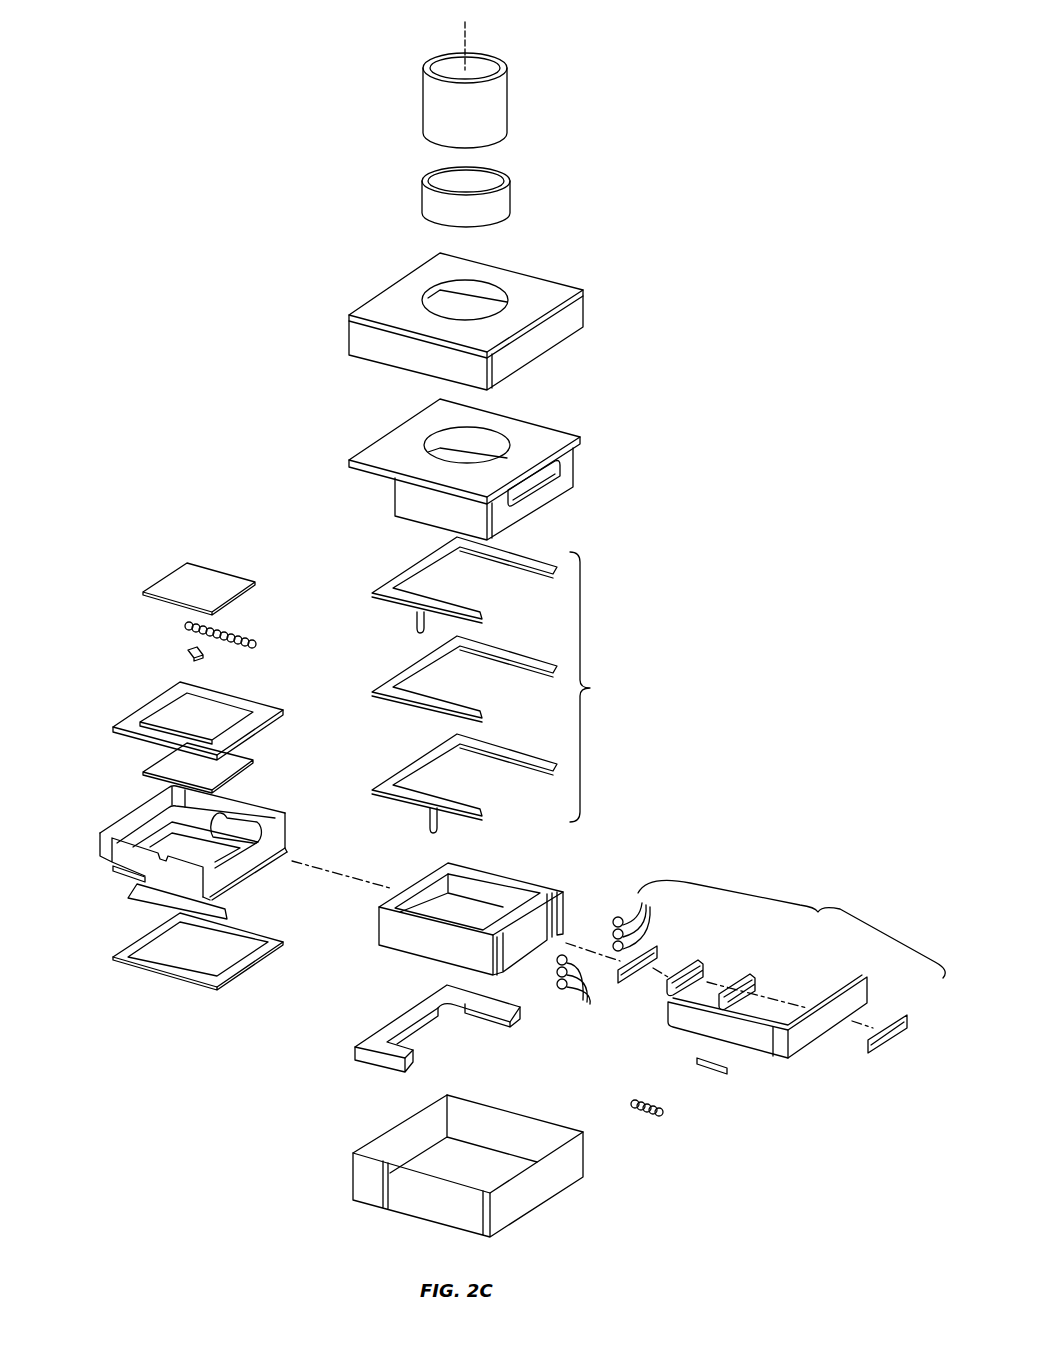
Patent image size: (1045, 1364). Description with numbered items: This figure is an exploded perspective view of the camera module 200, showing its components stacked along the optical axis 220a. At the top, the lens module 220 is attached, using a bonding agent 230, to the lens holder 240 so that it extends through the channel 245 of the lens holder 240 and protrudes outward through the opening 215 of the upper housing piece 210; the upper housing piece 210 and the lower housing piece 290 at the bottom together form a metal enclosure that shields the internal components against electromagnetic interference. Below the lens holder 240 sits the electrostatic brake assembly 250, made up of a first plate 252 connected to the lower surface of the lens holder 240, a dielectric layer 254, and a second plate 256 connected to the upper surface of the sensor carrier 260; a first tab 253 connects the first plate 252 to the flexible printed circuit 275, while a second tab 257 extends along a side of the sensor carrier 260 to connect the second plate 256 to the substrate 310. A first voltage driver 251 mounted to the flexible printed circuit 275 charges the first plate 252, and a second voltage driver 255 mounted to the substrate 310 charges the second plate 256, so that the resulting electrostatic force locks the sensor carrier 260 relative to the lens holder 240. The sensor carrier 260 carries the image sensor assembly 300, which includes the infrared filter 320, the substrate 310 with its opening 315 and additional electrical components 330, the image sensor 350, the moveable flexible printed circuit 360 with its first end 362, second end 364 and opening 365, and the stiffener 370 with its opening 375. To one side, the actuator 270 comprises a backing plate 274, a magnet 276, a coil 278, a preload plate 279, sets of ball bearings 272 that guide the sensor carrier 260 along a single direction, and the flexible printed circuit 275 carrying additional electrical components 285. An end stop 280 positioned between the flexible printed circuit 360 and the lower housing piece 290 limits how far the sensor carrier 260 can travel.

The camera module 200 is at (222, 40).
The upper housing piece 210 is at (499, 316).
The opening 215 is at (472, 304).
The lens module 220 is at (509, 95).
The optical axis 220a is at (470, 32).
The bonding agent 230 is at (512, 193).
The lens holder 240 is at (493, 461).
The channel 245 is at (470, 450).
The electrostatic brake assembly 250 is at (468, 685).
The first voltage driver 251 is at (730, 1075).
The first plate 252 is at (369, 592).
The first tab 253 is at (415, 621).
The dielectric layer 254 is at (369, 691).
The second voltage driver 255 is at (186, 650).
The second plate 256 is at (369, 789).
The second tab 257 is at (428, 821).
The sensor carrier 260 is at (515, 880).
The actuator 270 is at (751, 993).
The ball bearings 272 is at (619, 952).
The backing plate 274 is at (658, 950).
The flexible printed circuit 275 is at (823, 1037).
The magnet 276 is at (708, 964).
The coil 278 is at (763, 977).
The preload plate 279 is at (890, 1050).
The end stop 280 is at (354, 1049).
The additional electrical components 285 is at (663, 1113).
The lower housing piece 290 is at (585, 1150).
The image sensor assembly 300 is at (123, 530).
The substrate 310 is at (164, 710).
The opening 315 is at (207, 737).
The infrared filter 320 is at (141, 590).
The additional electrical components 330 is at (185, 626).
The image sensor 350 is at (141, 770).
The moveable flexible printed circuit 360 is at (165, 850).
The first end 362 is at (252, 875).
The second end 364 is at (128, 885).
The opening 365 is at (238, 823).
The stiffener 370 is at (164, 941).
The opening 375 is at (207, 960).